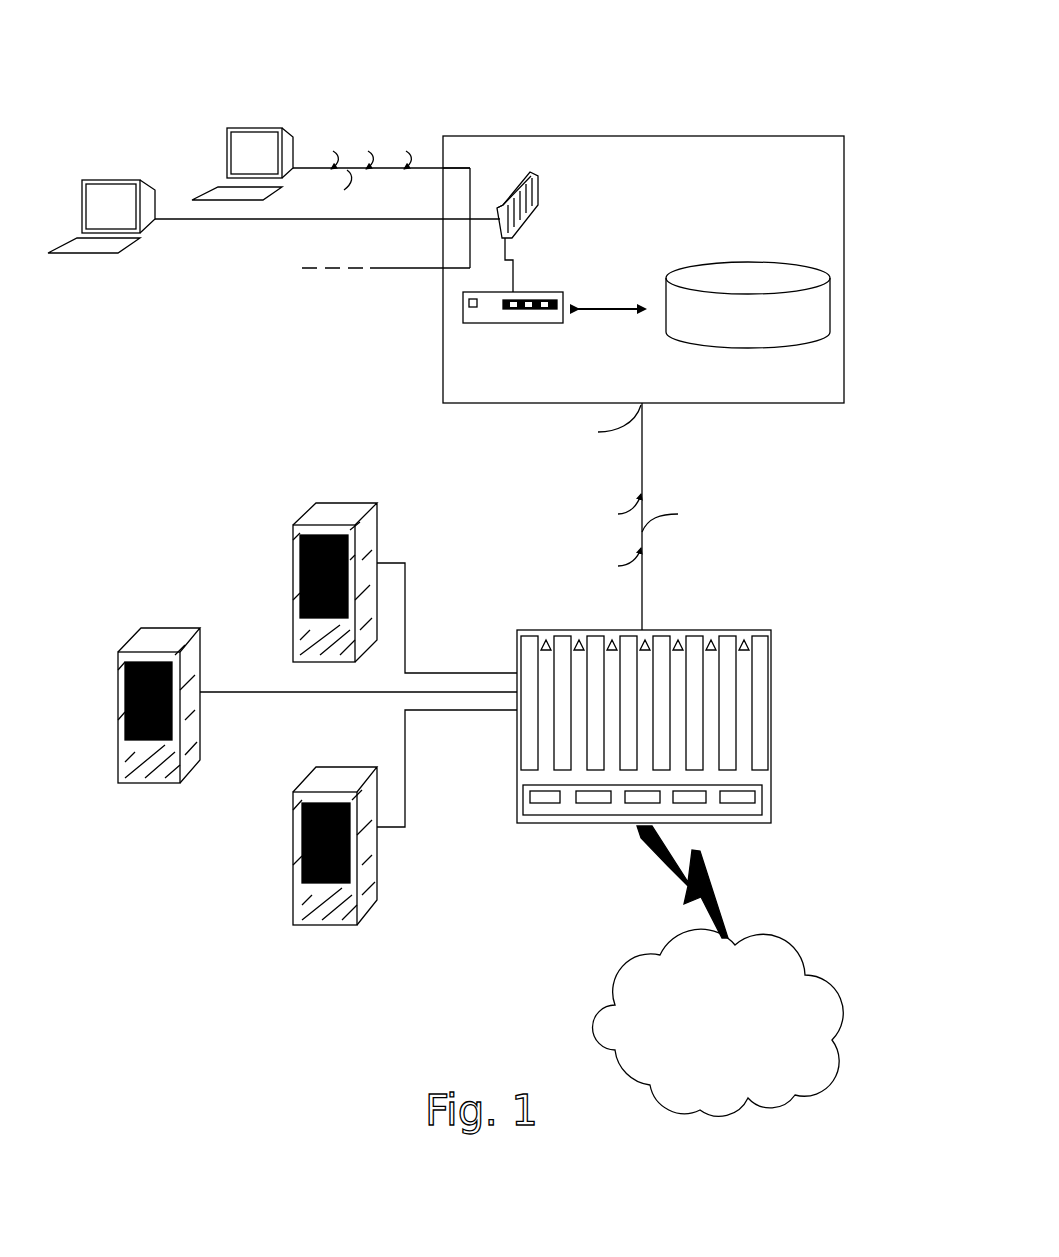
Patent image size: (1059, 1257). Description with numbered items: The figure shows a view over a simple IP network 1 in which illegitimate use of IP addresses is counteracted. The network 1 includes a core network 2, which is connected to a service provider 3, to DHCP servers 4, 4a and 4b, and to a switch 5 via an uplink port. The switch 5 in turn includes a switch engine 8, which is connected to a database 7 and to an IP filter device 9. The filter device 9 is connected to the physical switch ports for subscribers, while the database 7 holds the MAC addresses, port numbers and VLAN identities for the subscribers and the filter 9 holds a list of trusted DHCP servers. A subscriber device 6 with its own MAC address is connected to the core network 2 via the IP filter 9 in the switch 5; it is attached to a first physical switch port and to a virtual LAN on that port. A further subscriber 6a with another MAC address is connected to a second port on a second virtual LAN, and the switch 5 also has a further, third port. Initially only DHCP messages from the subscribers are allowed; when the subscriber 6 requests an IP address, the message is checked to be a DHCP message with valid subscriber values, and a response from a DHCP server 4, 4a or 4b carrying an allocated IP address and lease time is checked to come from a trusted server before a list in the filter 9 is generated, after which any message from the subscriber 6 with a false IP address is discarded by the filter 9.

The IP network 1 is at (732, 76).
The core network 2 is at (740, 630).
The service provider 3 is at (770, 940).
The DHCP server 4 is at (335, 518).
The DHCP server 4a is at (170, 640).
The DHCP server 4b is at (340, 780).
The switch 5 is at (723, 410).
The subscriber device 6 is at (250, 128).
The subscriber 6a is at (103, 182).
The database 7 is at (752, 278).
The switch engine 8 is at (563, 323).
The IP filter device 9 is at (538, 200).